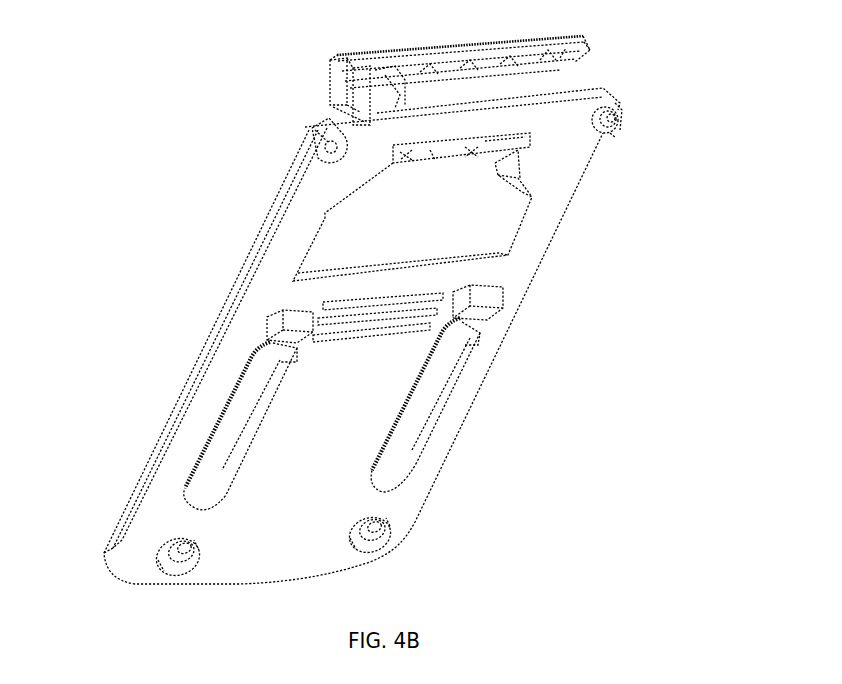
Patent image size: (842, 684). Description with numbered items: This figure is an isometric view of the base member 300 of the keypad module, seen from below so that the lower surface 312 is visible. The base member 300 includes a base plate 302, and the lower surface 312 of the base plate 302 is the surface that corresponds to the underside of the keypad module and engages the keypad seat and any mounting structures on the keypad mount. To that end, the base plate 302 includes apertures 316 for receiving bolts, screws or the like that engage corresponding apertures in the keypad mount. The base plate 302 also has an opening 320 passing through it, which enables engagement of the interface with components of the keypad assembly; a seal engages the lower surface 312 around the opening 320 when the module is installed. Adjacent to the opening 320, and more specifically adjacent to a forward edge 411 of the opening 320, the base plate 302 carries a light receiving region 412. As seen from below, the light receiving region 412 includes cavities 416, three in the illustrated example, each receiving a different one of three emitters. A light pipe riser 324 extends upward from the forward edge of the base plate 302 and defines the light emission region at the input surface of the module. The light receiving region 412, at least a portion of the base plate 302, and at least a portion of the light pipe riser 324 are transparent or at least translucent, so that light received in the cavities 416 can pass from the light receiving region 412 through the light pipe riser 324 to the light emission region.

The base member 300 is at (403, 306).
The base plate 302 is at (545, 293).
The lower surface 312 is at (570, 155).
The apertures 316 is at (332, 146).
The opening 320 is at (452, 242).
The light pipe riser 324 is at (585, 74).
The forward edge 411 is at (453, 157).
The light receiving region 412 is at (493, 148).
The cavity 416 is at (418, 157).